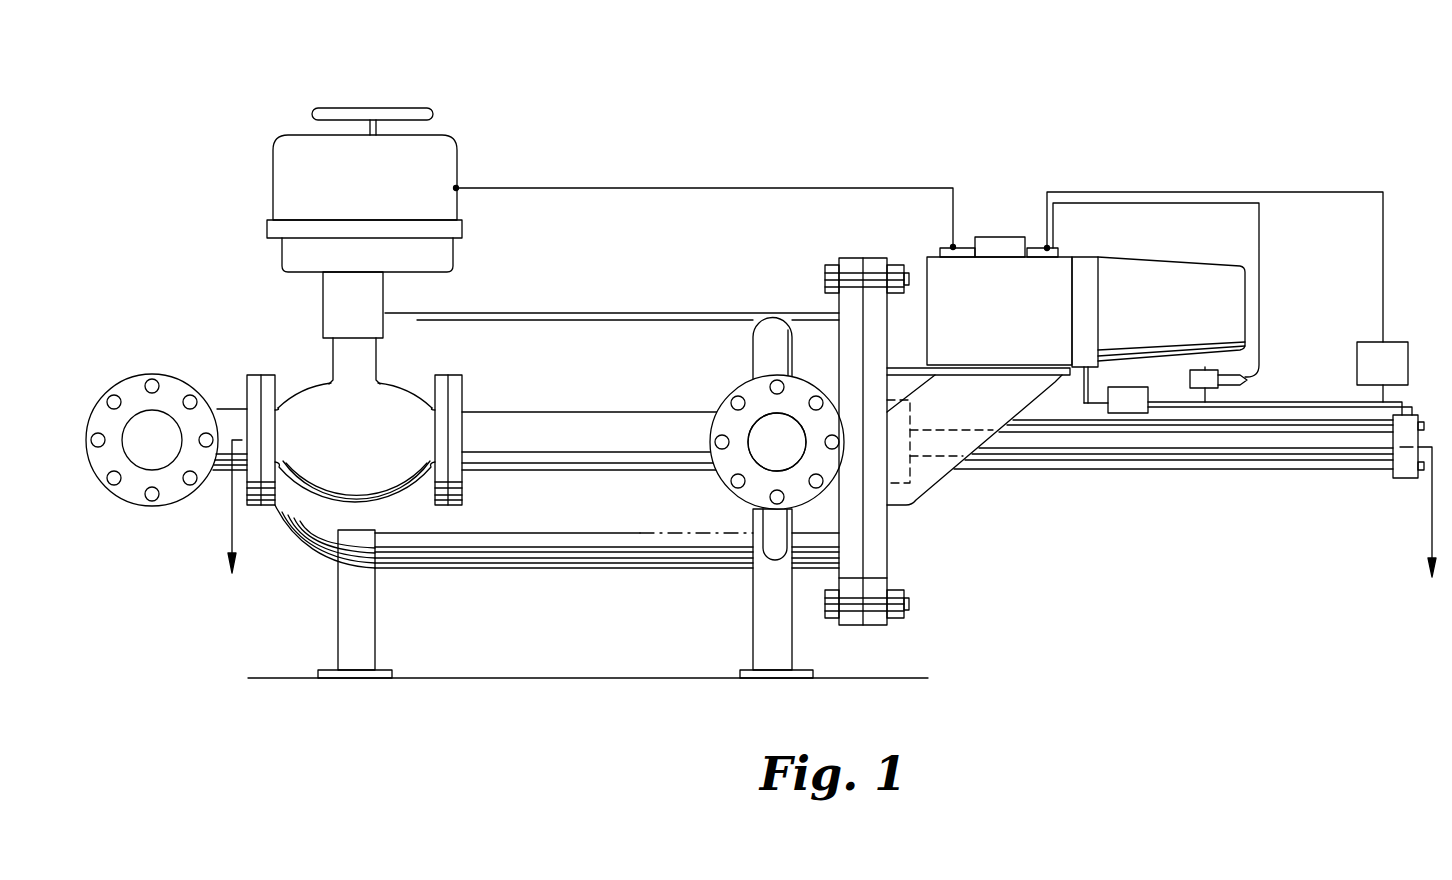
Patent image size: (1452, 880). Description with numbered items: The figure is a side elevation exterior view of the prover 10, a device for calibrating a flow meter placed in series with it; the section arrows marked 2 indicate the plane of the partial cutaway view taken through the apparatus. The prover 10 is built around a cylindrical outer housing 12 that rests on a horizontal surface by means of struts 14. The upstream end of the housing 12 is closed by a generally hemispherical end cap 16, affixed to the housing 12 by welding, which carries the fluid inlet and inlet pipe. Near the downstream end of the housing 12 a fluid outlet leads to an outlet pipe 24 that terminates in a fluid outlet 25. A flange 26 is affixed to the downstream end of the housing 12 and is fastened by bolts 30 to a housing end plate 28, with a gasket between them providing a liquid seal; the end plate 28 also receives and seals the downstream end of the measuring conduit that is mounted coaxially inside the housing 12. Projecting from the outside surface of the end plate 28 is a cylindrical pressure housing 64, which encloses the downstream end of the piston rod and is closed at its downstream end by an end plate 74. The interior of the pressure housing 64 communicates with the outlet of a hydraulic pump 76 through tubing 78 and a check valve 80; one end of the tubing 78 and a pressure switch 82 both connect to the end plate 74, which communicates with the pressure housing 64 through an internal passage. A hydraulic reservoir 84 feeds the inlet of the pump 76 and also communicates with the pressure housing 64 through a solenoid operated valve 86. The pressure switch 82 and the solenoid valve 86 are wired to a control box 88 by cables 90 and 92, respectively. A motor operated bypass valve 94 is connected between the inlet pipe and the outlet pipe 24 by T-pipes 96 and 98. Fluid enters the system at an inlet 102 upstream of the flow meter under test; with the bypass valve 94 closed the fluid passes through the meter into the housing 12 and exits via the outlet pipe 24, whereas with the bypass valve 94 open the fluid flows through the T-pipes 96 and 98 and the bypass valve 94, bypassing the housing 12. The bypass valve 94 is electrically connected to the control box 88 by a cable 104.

The prover 10 is at (868, 63).
The cylindrical outer housing 12 is at (602, 310).
The struts 14 is at (375, 640).
The hemispherical end cap 16 is at (283, 340).
The outlet pipe 24 is at (742, 386).
The fluid outlet 25 is at (762, 447).
The flange 26 is at (838, 304).
The housing end plate 28 is at (887, 552).
The bolts 30 is at (825, 268).
The cylindrical pressure housing 64 is at (1178, 450).
The end plate 74 is at (1403, 480).
The hydraulic pump 76 is at (1082, 257).
The tubing 78 is at (1302, 400).
The check valve 80 is at (1125, 386).
The pressure switch 82 is at (1395, 342).
The hydraulic reservoir 84 is at (1170, 262).
The solenoid operated valve 86 is at (1246, 386).
The control box 88 is at (1003, 237).
The cable 90 is at (1310, 192).
The cable 92 is at (1262, 255).
The motor operated bypass valve 94 is at (458, 146).
The T-pipe 96 is at (230, 407).
The T-pipe 98 is at (590, 410).
The inlet 102 is at (143, 427).
The cable 104 is at (548, 184).
The section line 2- 2 is at (832, 519).